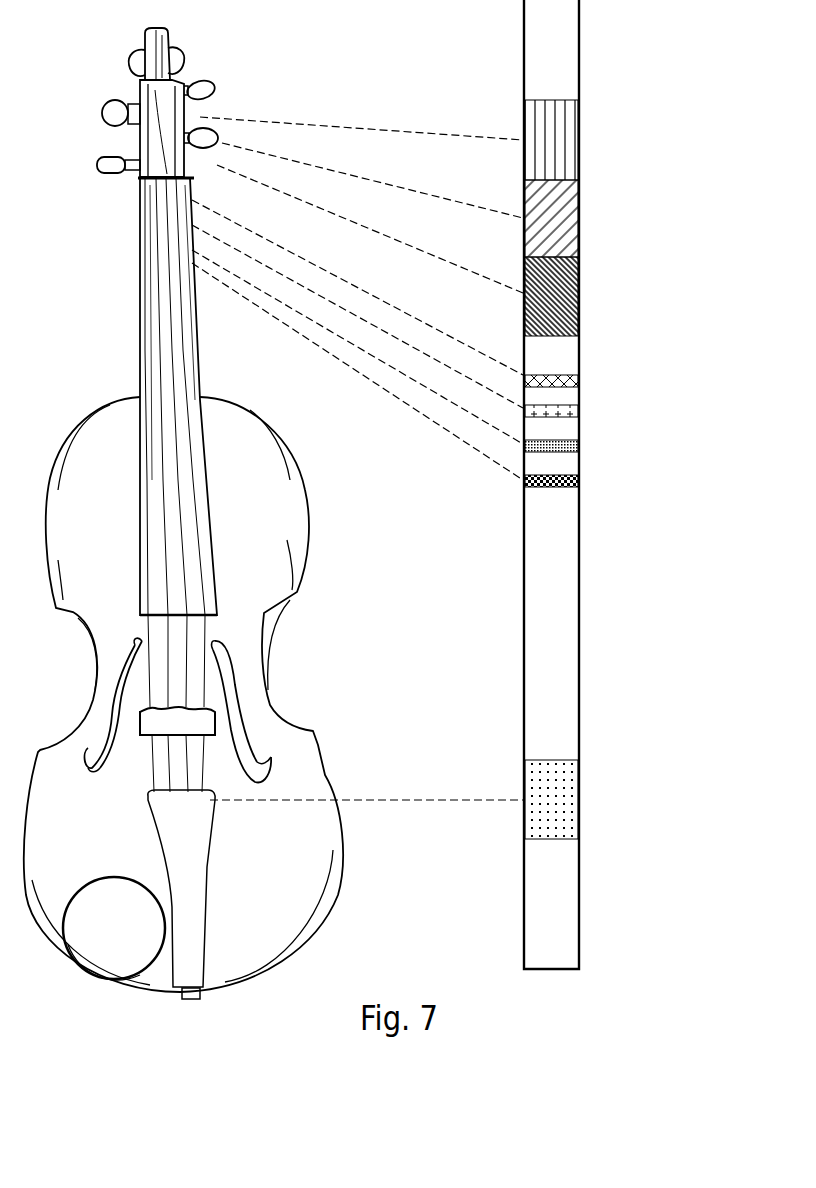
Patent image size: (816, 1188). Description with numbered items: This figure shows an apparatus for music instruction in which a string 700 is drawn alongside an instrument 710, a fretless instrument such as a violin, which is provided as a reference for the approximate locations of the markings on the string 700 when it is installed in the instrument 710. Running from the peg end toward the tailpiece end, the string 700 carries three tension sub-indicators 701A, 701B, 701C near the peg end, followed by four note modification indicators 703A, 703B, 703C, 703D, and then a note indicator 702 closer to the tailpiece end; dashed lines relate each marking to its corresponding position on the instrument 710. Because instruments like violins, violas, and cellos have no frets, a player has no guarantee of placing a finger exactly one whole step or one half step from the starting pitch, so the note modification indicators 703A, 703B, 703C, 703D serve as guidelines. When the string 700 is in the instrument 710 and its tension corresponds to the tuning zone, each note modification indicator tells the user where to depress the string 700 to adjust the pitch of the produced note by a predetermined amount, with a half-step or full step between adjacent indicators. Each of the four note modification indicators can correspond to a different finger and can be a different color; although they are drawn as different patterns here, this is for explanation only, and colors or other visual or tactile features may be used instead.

The string 700 is at (607, 484).
The tension sub-indicator 701A is at (580, 139).
The tension sub-indicator 701B is at (580, 217).
The tension sub-indicator 701C is at (580, 293).
The note modification indicator 703A is at (580, 379).
The note modification indicator 703B is at (580, 410).
The note modification indicator 703C is at (580, 444).
The note modification indicator 703D is at (580, 479).
The note indicator 702 is at (581, 800).
The instrument 710 is at (268, 680).